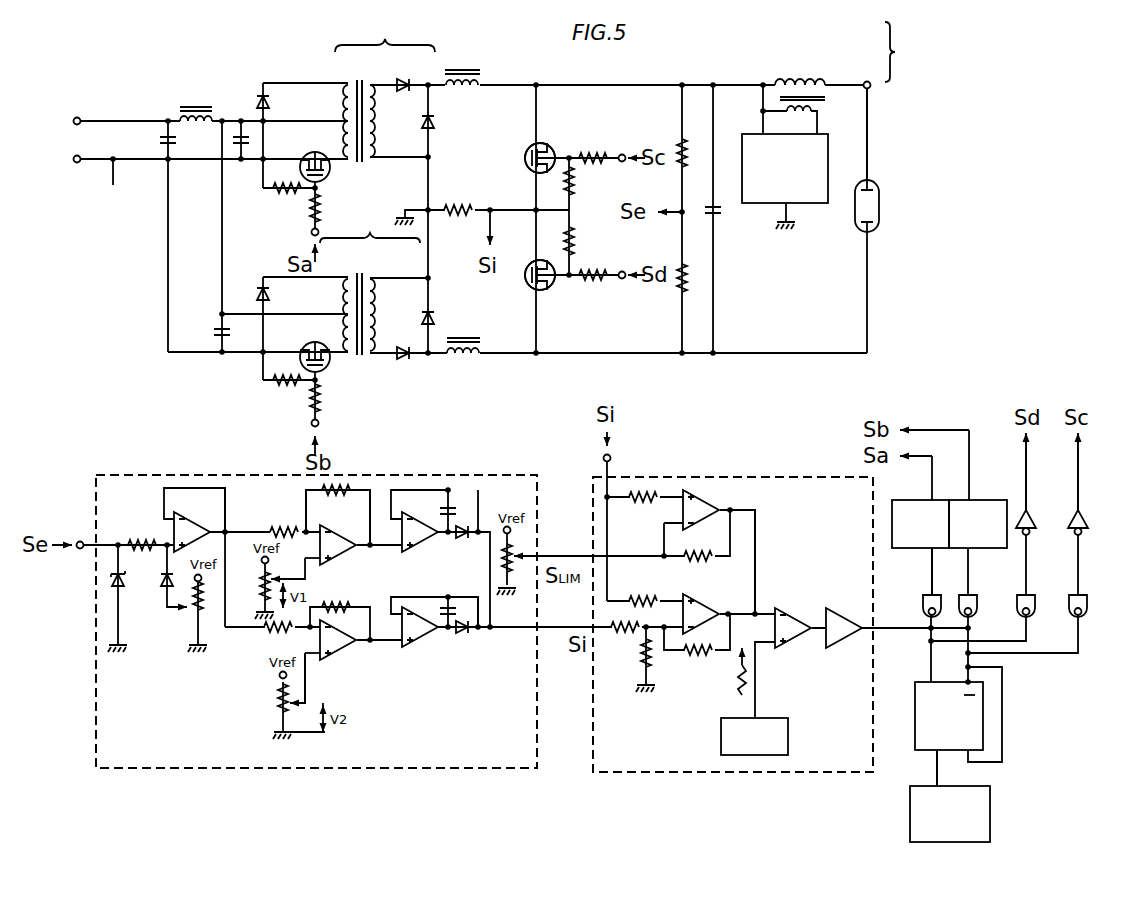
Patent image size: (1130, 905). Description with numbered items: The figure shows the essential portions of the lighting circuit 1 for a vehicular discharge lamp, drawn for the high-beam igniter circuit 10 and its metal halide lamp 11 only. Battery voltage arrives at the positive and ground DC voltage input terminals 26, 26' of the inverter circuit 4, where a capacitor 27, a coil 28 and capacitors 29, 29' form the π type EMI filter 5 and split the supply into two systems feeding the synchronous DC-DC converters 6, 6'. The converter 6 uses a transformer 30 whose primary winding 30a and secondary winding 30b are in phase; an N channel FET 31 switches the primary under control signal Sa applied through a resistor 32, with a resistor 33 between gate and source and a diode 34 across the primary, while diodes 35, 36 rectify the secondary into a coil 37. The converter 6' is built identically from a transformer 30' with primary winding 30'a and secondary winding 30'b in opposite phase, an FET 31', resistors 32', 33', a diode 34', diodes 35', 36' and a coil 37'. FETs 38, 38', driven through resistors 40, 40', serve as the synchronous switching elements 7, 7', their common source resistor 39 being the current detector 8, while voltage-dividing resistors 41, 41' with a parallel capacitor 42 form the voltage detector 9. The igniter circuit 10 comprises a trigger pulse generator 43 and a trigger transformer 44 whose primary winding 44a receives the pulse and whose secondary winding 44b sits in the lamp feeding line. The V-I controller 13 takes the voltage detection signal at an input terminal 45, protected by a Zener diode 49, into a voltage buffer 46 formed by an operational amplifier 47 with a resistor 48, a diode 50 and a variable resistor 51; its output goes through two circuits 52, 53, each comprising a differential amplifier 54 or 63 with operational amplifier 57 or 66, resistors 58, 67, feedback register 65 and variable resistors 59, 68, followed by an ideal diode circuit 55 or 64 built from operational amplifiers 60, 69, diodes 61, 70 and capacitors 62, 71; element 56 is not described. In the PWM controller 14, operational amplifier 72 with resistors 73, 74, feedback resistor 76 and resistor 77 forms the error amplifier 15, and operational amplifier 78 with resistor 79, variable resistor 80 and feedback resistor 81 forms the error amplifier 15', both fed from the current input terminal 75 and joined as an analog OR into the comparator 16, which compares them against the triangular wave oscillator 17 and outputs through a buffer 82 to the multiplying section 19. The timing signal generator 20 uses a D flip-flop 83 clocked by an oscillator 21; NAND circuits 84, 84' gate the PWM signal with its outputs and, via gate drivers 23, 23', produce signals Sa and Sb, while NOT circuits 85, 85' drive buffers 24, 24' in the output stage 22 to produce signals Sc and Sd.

The lighting circuit 1 is at (932, 94).
The inverter circuit 4 is at (491, 68).
The π type EMI filter 5 is at (183, 102).
The synchronous DC-DC converter 6 is at (284, 47).
The synchronous DC-DC converter 6' is at (291, 247).
The synchronous switching element 7 is at (534, 135).
The synchronous switching element 7' is at (559, 303).
The current detector 8 is at (463, 220).
The voltage detector 9 is at (670, 140).
The igniter circuit 10 is at (755, 78).
The metal halide lamp 11 is at (879, 202).
The V-I controller 13 is at (153, 473).
The PWM controller 14 is at (755, 477).
The error amplifier 15 is at (704, 678).
The error amplifier 15' is at (774, 555).
The comparator 16 is at (788, 612).
The triangular wave oscillator 17 is at (789, 741).
The multiplying section 19 is at (920, 592).
The timing signal generator 20 is at (1008, 716).
The oscillator 21 is at (910, 807).
The buffer circuit 22 is at (1090, 462).
The gate driver 23 is at (927, 509).
The gate driver 23' is at (979, 509).
The buffer 24 is at (1093, 506).
The buffer 24' is at (1040, 506).
The DC voltage input terminal 26 is at (75, 99).
The DC voltage input terminal 26' is at (74, 195).
The capacitor 27 is at (162, 135).
The coil 28 is at (194, 124).
The capacitor 29 is at (242, 170).
The capacitor 29' is at (203, 308).
The transformer 30 is at (374, 89).
The primary winding 30a is at (349, 85).
The secondary winding 30b is at (371, 85).
The transformer 30' is at (366, 284).
The primary winding 30'a is at (344, 297).
The secondary winding 30'b is at (400, 297).
The N channel FET 31 is at (335, 171).
The N channel FET 31' is at (338, 366).
The resistor 32 is at (333, 214).
The resistor 32' is at (343, 405).
The resistor 33 is at (285, 210).
The resistor 33' is at (282, 396).
The diode 34 is at (291, 108).
The diode 34' is at (291, 300).
The diode 35 is at (399, 107).
The diode 35' is at (409, 385).
The diode 36 is at (456, 133).
The diode 36' is at (447, 303).
The coil 37 is at (474, 96).
The coil 37' is at (469, 369).
The N channel FET 38 is at (548, 135).
The N channel FET 38' is at (550, 295).
The resistor 39 is at (465, 206).
The resistor 40 is at (601, 178).
The resistor 40' is at (602, 297).
The voltage-dividing resistor 41 is at (694, 139).
The voltage-dividing resistor 41' is at (665, 300).
The capacitor 42 is at (717, 217).
The trigger pulse generator 43 is at (813, 203).
The trigger transformer 44 is at (851, 71).
The primary winding 44a is at (821, 106).
The secondary winding 44b is at (823, 88).
The input terminal 45 is at (80, 549).
The voltage buffer 46 is at (165, 529).
The operational amplifier 47 is at (203, 524).
The resistor 48 is at (150, 554).
The Zener diode 49 is at (120, 575).
The diode 50 is at (166, 588).
The variable resistor 51 is at (202, 617).
The circuit 52 is at (337, 557).
The circuit 53 is at (392, 685).
The differential amplifier 54 is at (297, 518).
The ideal diode circuit 55 is at (487, 524).
The operational amplifier 56 is at (342, 540).
The operational amplifier 57 is at (335, 561).
The resistor 58 is at (270, 525).
The variable resistor 59 is at (266, 580).
The operational amplifier 60 is at (422, 543).
The diode 61 is at (467, 540).
The capacitor 62 is at (444, 509).
The differential amplifier 63 is at (331, 664).
The ideal diode circuit 64 is at (448, 656).
The register 65 is at (336, 610).
The operational amplifier 66 is at (336, 652).
The resistor 67 is at (267, 631).
The variable resistor 68 is at (275, 720).
The operational amplifier 69 is at (409, 647).
The diode 70 is at (490, 646).
The capacitor 71 is at (440, 605).
The operational amplifier 72 is at (706, 598).
The resistor 73 is at (616, 633).
The resistor 74 is at (639, 601).
The input terminal 75 is at (612, 457).
The feedback resistor 76 is at (653, 666).
The resistor 77 is at (635, 675).
The operational amplifier 78 is at (706, 502).
The resistor 79 is at (634, 503).
The variable resistor 80 is at (513, 569).
The feedback resistor 81 is at (688, 557).
The buffer 82 is at (842, 614).
The D flip-flop 83 is at (915, 738).
The two-input NAND circuit 84 is at (910, 609).
The two-input NAND circuit 84' is at (955, 591).
The NOT circuit 85 is at (1062, 590).
The NOT circuit 85' is at (1006, 593).